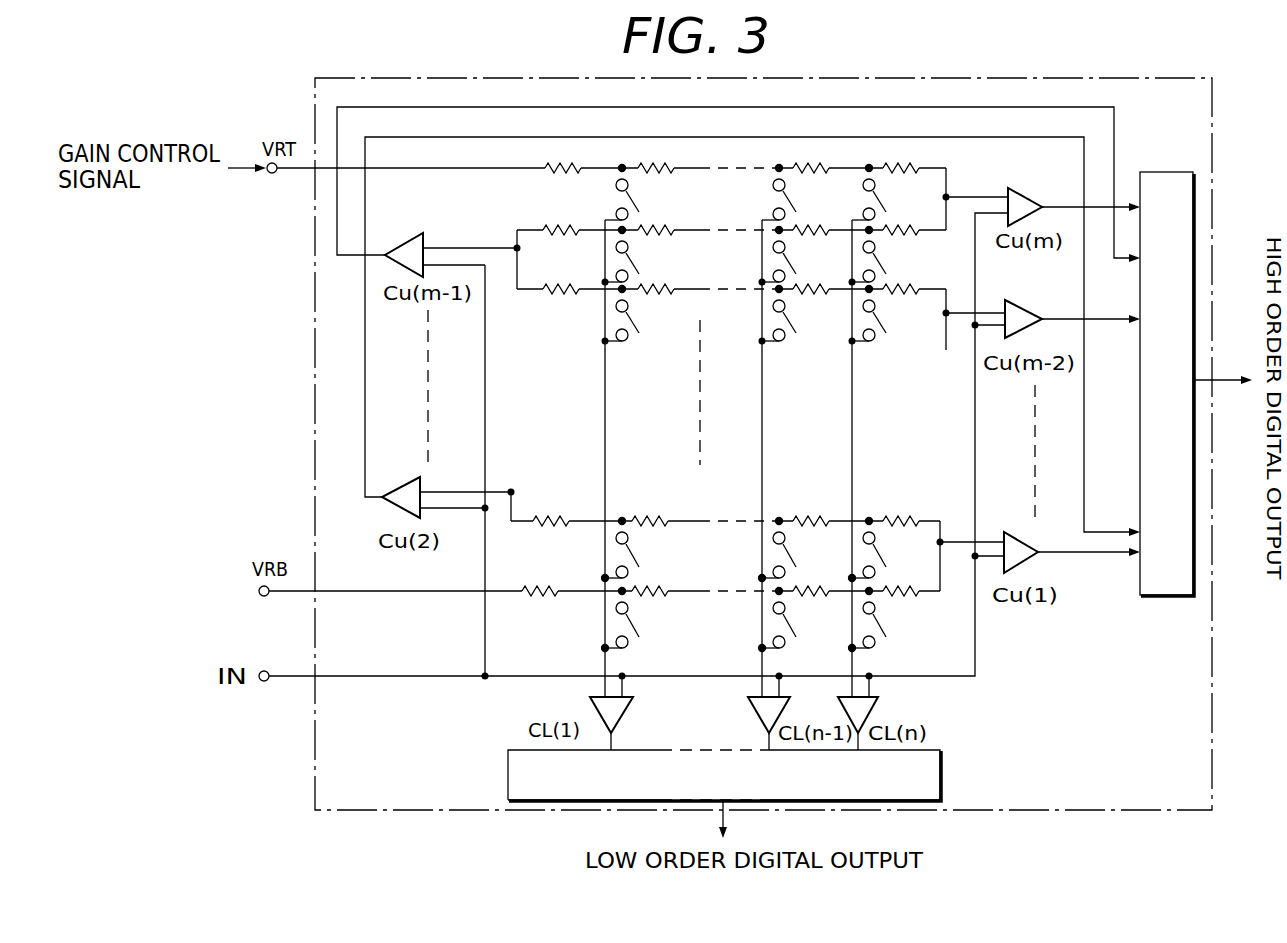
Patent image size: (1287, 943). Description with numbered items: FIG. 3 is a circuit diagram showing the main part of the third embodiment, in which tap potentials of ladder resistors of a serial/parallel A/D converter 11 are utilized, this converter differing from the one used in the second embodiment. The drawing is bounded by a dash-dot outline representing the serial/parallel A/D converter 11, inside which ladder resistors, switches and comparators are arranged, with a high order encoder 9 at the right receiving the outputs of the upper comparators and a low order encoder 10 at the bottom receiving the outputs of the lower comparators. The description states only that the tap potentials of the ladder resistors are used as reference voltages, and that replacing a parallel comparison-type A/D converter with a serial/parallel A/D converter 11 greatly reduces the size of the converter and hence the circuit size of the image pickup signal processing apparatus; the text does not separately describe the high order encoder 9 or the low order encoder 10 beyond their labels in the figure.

The high order encoder 9 is at (1172, 172).
The low order encoder 10 is at (940, 782).
The serial/parallel A/D converter 11 is at (1212, 793).